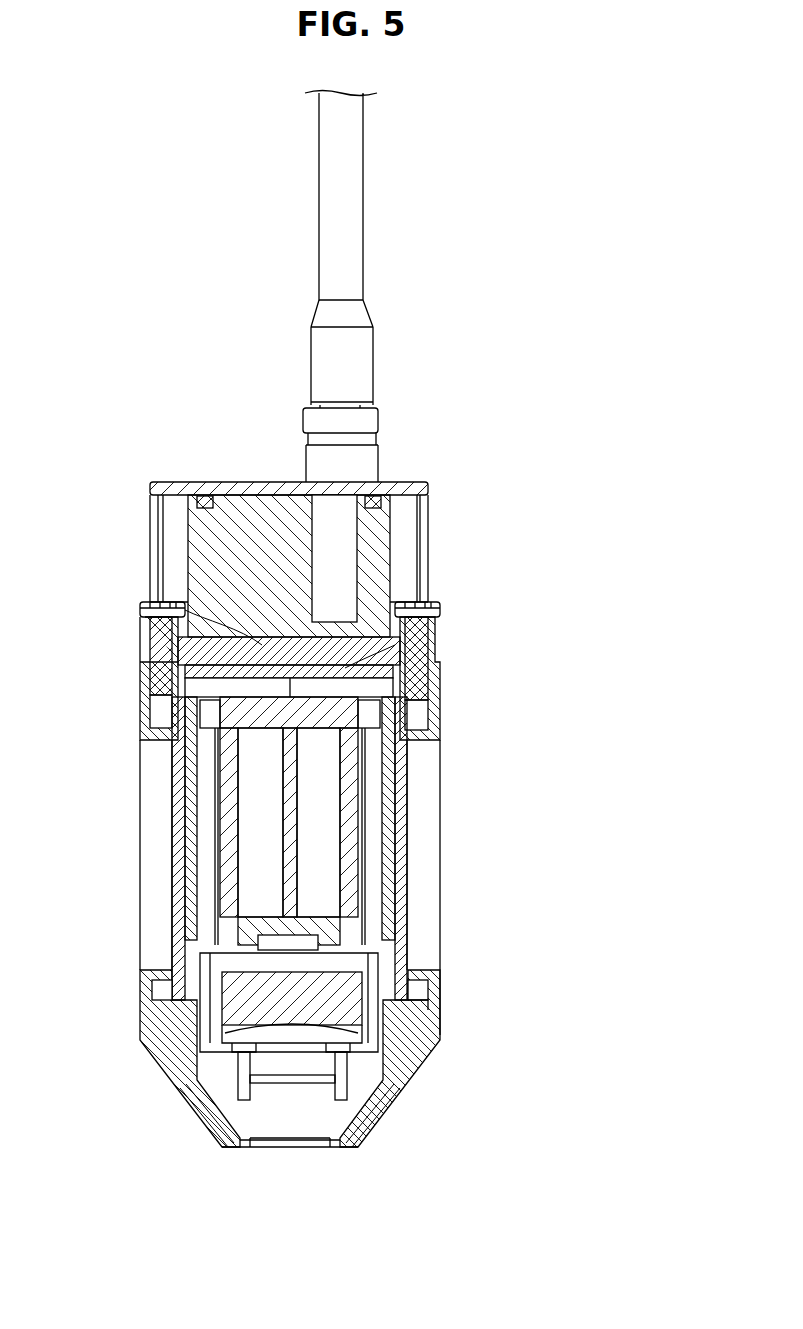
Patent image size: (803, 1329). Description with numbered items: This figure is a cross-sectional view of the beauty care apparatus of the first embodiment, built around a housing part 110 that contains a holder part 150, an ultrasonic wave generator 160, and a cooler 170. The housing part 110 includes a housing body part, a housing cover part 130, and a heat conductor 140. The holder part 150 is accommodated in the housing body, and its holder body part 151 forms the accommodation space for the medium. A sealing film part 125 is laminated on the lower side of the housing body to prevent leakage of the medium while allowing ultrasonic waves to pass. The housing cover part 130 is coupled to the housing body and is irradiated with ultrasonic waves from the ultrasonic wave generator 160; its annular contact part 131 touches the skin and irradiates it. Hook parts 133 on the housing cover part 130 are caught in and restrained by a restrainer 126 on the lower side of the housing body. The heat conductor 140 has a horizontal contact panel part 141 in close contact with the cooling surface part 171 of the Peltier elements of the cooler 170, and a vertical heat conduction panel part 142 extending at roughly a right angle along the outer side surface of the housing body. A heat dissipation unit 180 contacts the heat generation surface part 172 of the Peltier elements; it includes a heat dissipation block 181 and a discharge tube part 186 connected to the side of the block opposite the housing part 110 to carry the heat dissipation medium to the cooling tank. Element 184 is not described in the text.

The housing part 110 is at (505, 803).
The sealing film part 125 is at (312, 1142).
The restrainer 126 is at (432, 1000).
The housing cover part 130 is at (155, 1079).
The contact part 131 is at (216, 1142).
The hook part 133 is at (432, 986).
The heat conductor 140 is at (445, 766).
The contact panel part 141 is at (402, 690).
The heat conduction panel part 142 is at (428, 875).
The holder part 150 is at (210, 850).
The holder body part 151 is at (232, 800).
The ultrasonic wave generator 160 is at (232, 1000).
The cooler 170 is at (190, 648).
The cooling surface part 171 is at (190, 690).
The heat generation surface part 172 is at (150, 604).
The heat dissipation unit 180 is at (418, 475).
The heat dissipation block 181 is at (246, 510).
The fastening bolt 184 is at (412, 630).
The discharge tube part 186 is at (350, 240).